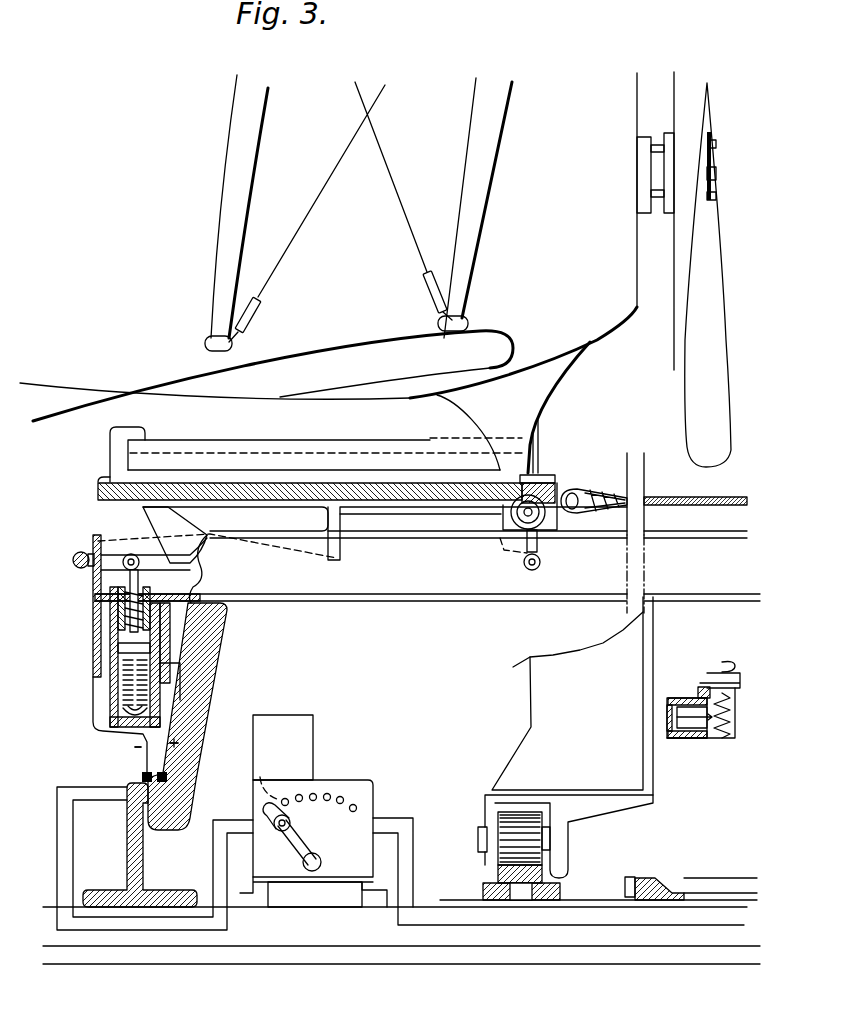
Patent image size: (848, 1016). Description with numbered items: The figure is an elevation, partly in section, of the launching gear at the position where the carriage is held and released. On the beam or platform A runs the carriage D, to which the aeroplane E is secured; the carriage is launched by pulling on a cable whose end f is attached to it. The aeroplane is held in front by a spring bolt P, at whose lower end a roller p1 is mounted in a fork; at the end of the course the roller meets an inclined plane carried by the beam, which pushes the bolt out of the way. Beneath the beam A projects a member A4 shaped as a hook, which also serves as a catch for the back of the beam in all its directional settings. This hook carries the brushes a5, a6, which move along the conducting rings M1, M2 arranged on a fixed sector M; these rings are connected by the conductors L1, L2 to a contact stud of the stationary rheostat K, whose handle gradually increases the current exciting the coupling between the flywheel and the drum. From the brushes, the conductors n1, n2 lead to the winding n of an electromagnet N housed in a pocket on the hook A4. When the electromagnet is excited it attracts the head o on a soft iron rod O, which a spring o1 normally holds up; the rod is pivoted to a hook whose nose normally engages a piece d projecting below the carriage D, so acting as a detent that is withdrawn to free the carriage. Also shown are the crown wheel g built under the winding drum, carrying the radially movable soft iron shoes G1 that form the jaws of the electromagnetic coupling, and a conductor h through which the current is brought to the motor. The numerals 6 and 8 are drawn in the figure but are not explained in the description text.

The seat spring 6 is at (162, 390).
The aeroplane E is at (614, 313).
The spring bolt P is at (540, 467).
The end of cable f is at (573, 492).
The carriage D is at (122, 501).
The detent piece d is at (151, 531).
The soft iron rod O is at (100, 590).
The spring o1 is at (118, 615).
The electromagnet N is at (115, 667).
The winding of electromagnet n is at (123, 683).
The conductor n1 is at (93, 710).
The head of rod o is at (150, 647).
The hook member A4 is at (208, 647).
The conductor n2 is at (188, 686).
The brush a6 is at (180, 750).
The brush a5 is at (147, 775).
The conducting ring M1 is at (143, 783).
The conducting ring M2 is at (167, 777).
The conductor L1 is at (216, 814).
The conductor L2 is at (227, 853).
The fixed sector M is at (133, 863).
The rheostat K is at (297, 843).
The beam A is at (737, 580).
The roller p1 is at (541, 560).
The plate 8 is at (660, 713).
The crown wheel g is at (698, 688).
The shoe G1 is at (712, 732).
The conductor h is at (732, 943).